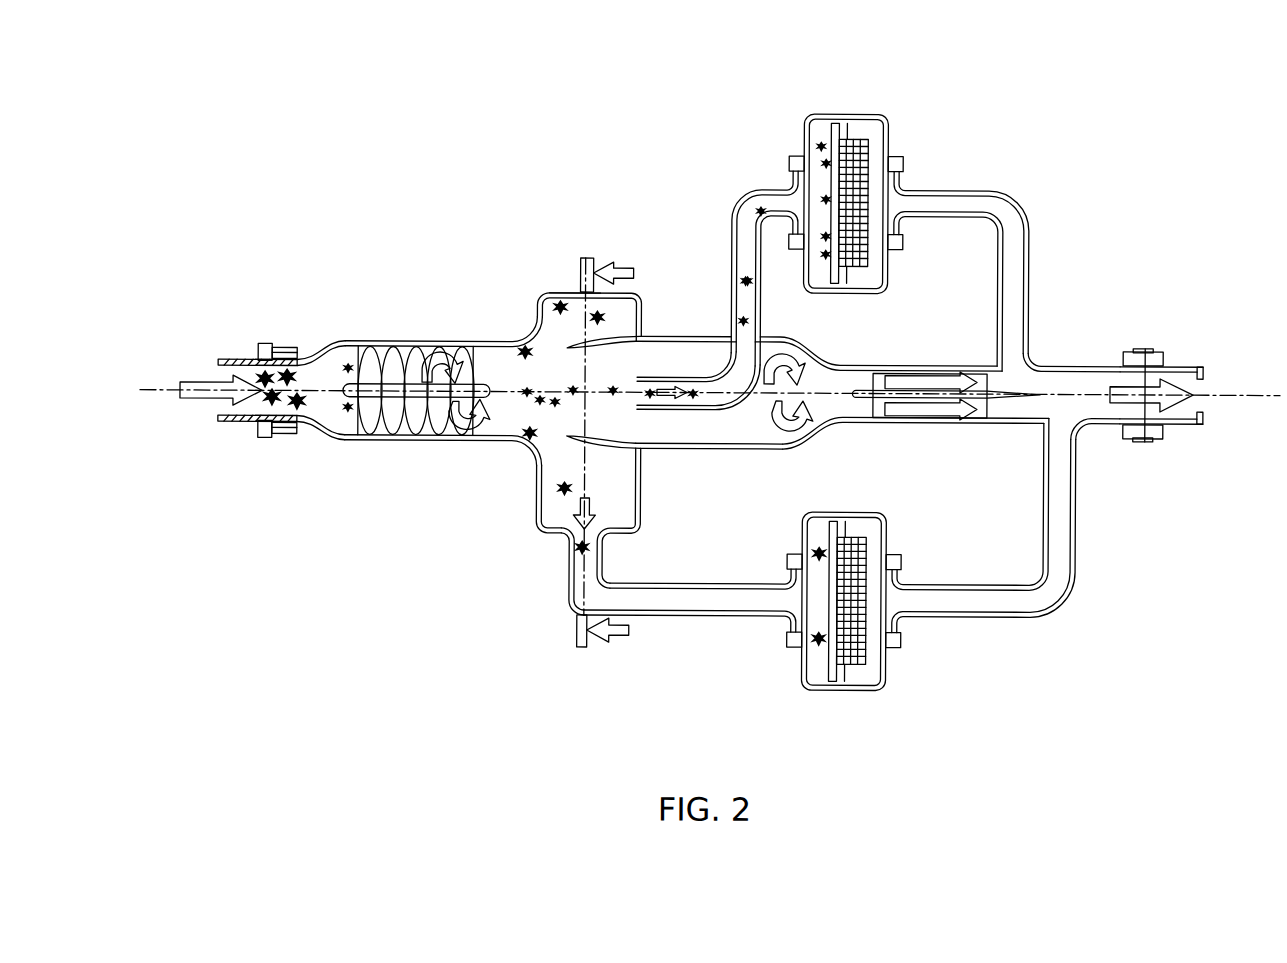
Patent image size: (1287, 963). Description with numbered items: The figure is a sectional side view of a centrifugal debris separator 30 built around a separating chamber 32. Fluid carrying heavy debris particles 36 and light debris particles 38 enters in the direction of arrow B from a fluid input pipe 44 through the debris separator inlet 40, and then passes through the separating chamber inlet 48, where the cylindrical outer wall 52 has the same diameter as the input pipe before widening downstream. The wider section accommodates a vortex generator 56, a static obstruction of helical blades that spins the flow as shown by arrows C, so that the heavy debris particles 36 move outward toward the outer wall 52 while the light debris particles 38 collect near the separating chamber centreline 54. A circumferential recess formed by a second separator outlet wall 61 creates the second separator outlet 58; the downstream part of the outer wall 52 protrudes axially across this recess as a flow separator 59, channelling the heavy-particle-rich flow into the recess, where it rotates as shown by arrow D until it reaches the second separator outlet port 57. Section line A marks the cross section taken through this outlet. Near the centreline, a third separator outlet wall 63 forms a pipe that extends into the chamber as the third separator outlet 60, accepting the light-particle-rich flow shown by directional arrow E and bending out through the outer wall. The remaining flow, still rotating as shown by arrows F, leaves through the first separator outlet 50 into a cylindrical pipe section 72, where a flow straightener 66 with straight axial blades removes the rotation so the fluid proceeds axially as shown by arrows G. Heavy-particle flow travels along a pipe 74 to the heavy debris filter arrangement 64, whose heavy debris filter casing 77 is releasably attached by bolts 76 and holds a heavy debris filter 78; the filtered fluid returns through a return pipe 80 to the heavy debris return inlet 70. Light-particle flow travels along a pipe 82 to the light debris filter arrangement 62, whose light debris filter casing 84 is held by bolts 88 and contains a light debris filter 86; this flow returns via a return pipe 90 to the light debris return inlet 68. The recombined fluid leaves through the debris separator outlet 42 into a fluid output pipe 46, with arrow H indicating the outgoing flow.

The centrifugal debris separator 30 is at (613, 122).
The separating chamber 32 is at (479, 223).
The heavy debris particles 36 is at (290, 362).
The light debris particles 38 is at (348, 366).
The debris separator inlet 40 is at (274, 346).
The debris separator outlet 42 is at (1147, 350).
The fluid input pipe 44 is at (240, 420).
The fluid output pipe 46 is at (1197, 369).
The separating chamber inlet 48 is at (303, 358).
The first separator outlet 50 is at (818, 370).
The outer wall 52 is at (372, 442).
The separating chamber centreline 54 is at (343, 396).
The vortex generator 56 is at (405, 347).
The second separator outlet port 57 is at (568, 552).
The second separator outlet 58 is at (542, 505).
The flow separator 59 is at (607, 340).
The third separator outlet 60 is at (650, 413).
The second separator outlet wall 61 is at (568, 293).
The light debris filter arrangement 62 is at (798, 99).
The third separator outlet wall 63 is at (679, 380).
The heavy debris filter arrangement 64 is at (872, 706).
The flow straightener 66 is at (912, 395).
The light debris return inlet 68 is at (1028, 356).
The heavy debris return inlet 70 is at (1070, 428).
The pipe section 72 is at (945, 372).
The pipe 74 is at (706, 612).
The bolts 76 is at (791, 648).
The heavy debris filter casing 77 is at (826, 689).
The heavy debris filter 78 is at (870, 656).
The return pipe 80 is at (1027, 617).
The pipe 82 is at (731, 264).
The light debris filter casing 84 is at (838, 113).
The light debris filter 86 is at (856, 150).
The bolts 88 is at (899, 160).
The return pipe 90 is at (957, 189).
The section A- A is at (605, 451).
The arrow B is at (205, 401).
The arrows C is at (453, 357).
The arrow D is at (577, 510).
The directional arrow E is at (687, 407).
The arrows F is at (807, 423).
The arrows G is at (940, 413).
The outlet flow direction H is at (1180, 404).